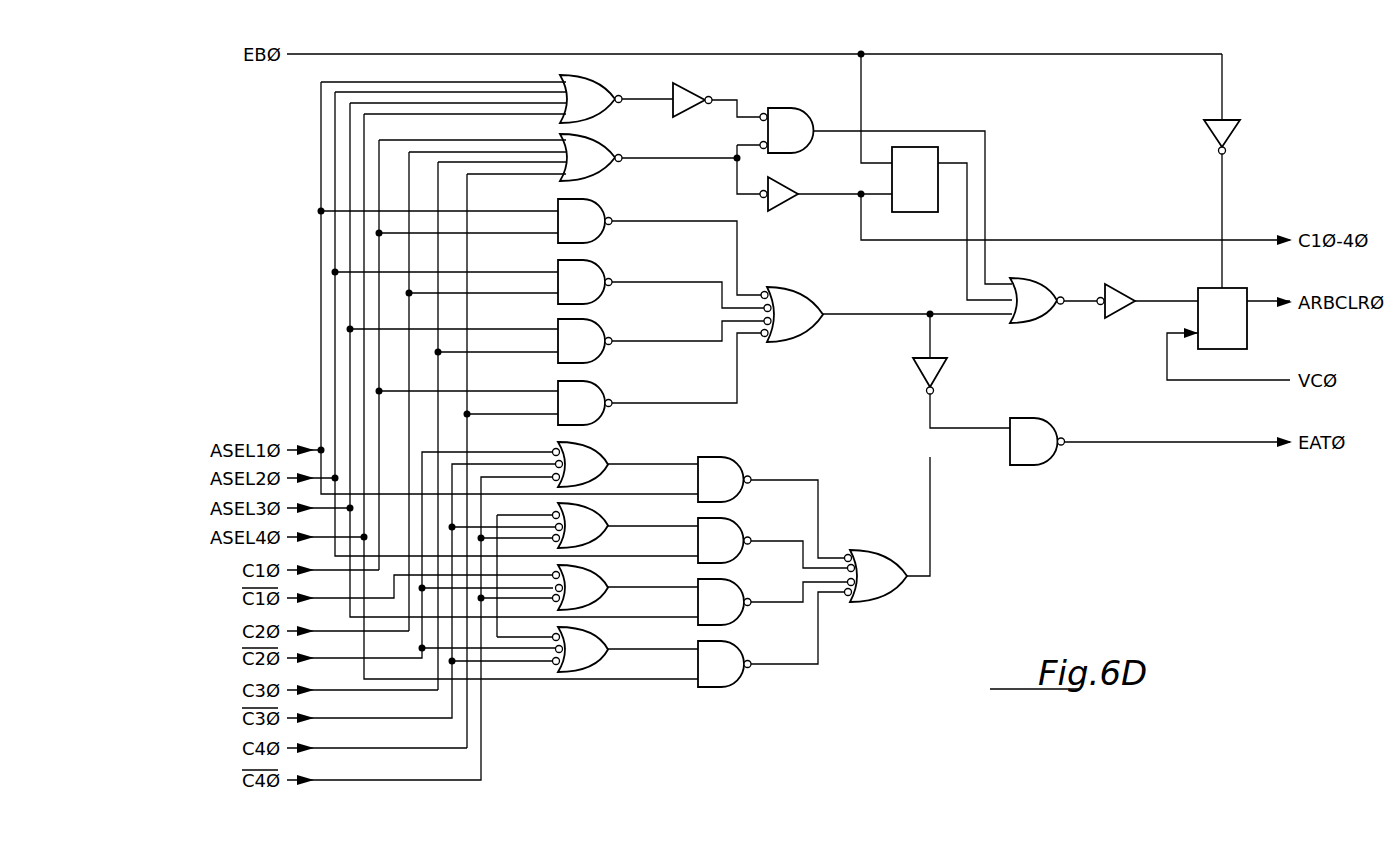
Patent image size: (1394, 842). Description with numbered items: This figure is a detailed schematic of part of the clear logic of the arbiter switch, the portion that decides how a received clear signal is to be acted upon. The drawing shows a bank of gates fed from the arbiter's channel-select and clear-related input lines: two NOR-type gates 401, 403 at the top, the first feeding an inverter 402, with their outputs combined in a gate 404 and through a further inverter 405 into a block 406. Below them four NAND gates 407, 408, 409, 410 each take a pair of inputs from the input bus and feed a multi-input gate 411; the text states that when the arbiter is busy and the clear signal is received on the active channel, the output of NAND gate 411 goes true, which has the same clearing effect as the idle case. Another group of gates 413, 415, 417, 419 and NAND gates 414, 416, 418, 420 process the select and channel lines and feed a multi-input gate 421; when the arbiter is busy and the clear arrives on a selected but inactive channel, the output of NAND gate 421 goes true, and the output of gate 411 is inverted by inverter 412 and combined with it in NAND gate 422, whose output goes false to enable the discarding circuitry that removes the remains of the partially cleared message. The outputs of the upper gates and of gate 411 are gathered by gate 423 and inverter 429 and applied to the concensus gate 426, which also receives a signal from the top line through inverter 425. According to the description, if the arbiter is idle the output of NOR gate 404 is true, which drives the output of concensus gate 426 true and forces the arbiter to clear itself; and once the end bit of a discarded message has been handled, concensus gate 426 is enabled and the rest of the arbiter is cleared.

The NOR gate 401 is at (586, 93).
The inverter 402 is at (688, 92).
The NOR gate 403 is at (596, 153).
The NOR gate 404 is at (793, 113).
The inverter 405 is at (781, 205).
The counter (C) 406 is at (915, 206).
The NAND gate 407 is at (594, 213).
The NAND gate 408 is at (595, 276).
The NAND gate 409 is at (598, 337).
The NAND gate 410 is at (597, 397).
The NAND gate 411 is at (803, 328).
The inverter 412 is at (940, 374).
The OR gate with inverted inputs 413 is at (598, 461).
The NAND gate 414 is at (732, 466).
The OR gate with inverted inputs 415 is at (598, 533).
The NAND gate 416 is at (735, 537).
The OR gate with inverted inputs 417 is at (598, 595).
The NAND gate 418 is at (734, 596).
The OR gate with inverted inputs 419 is at (600, 653).
The NAND gate 420 is at (737, 661).
The NAND gate 421 is at (881, 600).
The NAND gate 422 is at (1045, 459).
The NOR gate 423 is at (1043, 317).
The inverter 425 is at (1227, 128).
The concensus gate 426 is at (1247, 335).
The inverter 429 is at (1112, 292).